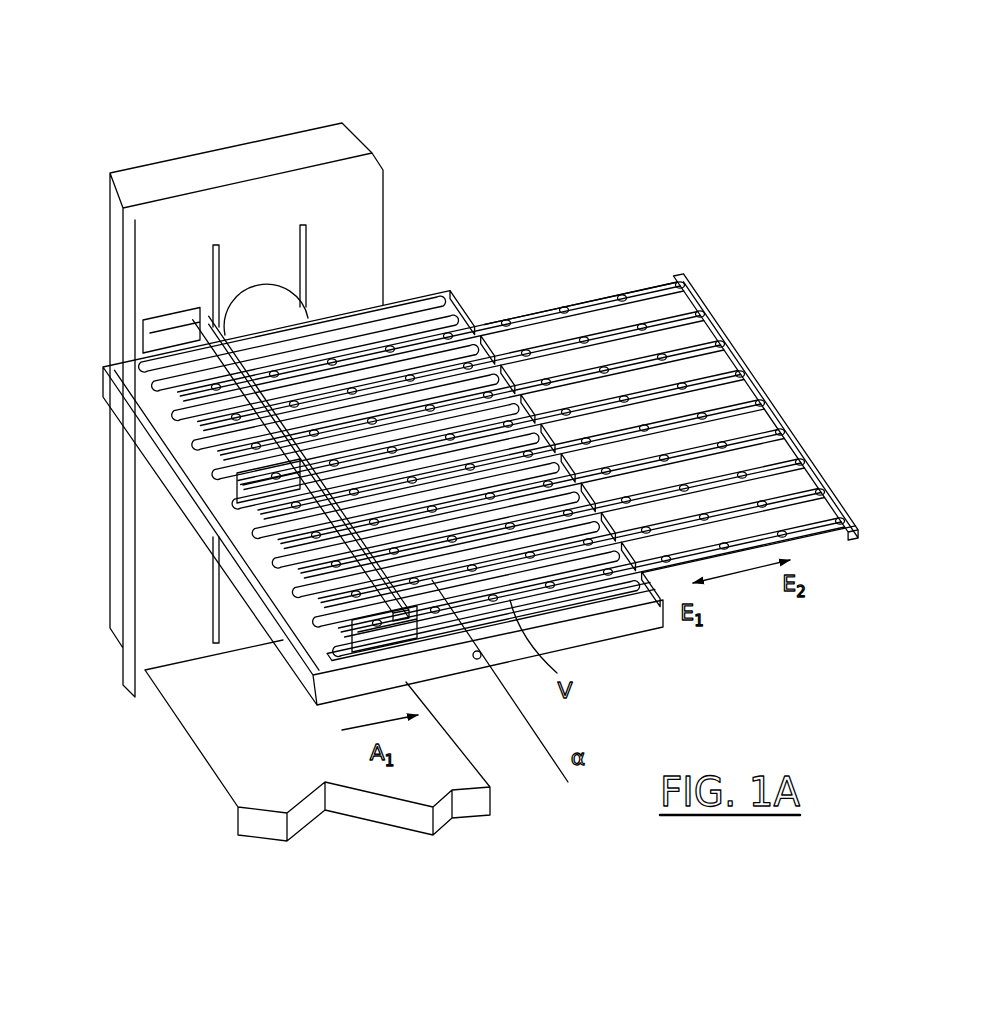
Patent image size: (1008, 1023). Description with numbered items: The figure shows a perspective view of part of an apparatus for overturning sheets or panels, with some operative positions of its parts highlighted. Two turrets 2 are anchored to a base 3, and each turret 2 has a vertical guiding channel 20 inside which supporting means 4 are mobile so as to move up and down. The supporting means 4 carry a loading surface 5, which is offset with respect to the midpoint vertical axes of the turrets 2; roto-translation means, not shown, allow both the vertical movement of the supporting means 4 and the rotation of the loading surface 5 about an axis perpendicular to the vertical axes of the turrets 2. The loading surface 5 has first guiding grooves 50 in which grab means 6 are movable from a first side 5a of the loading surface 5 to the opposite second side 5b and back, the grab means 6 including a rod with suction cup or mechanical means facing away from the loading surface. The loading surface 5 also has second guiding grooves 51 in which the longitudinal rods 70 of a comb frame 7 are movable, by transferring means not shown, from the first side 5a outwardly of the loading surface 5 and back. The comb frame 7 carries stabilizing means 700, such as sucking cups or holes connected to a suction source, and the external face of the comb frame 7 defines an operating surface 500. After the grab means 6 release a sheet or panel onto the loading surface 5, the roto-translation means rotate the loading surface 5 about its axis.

The turret 2 is at (360, 210).
The base 3 is at (243, 780).
The supporting means 4 is at (263, 305).
The loading surface 5 is at (358, 435).
The first side 5a is at (162, 527).
The second side 5b is at (708, 243).
The grab means 6 is at (178, 298).
The comb frame 7 is at (518, 391).
The vertical guiding channel 20 is at (216, 243).
The first guiding groove 50 is at (410, 303).
The second guiding groove 51 is at (478, 327).
The longitudinal rod 70 is at (588, 307).
The operating surface 500 is at (655, 282).
The stabilizing means 700 is at (705, 303).